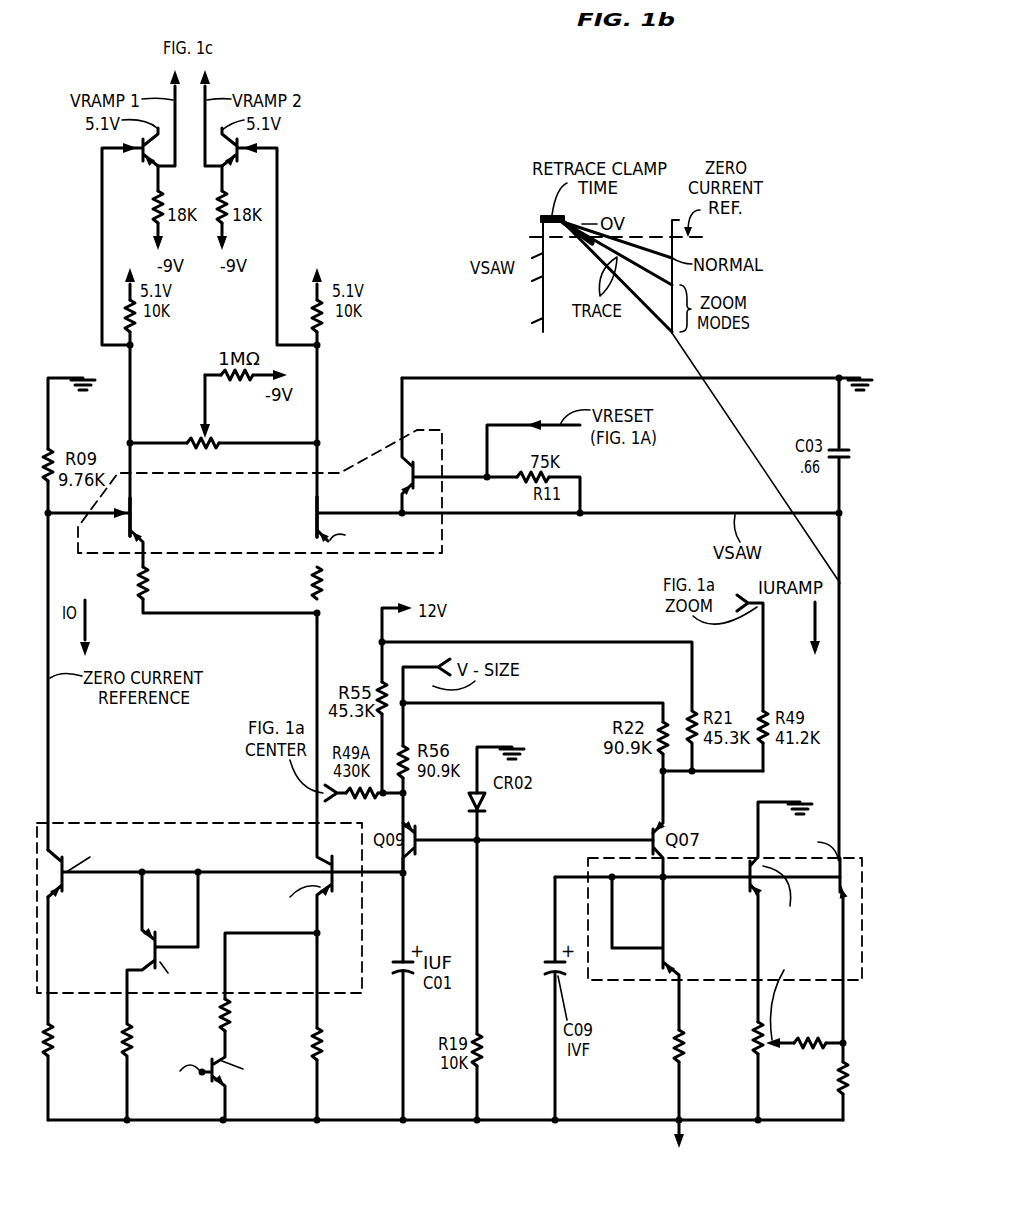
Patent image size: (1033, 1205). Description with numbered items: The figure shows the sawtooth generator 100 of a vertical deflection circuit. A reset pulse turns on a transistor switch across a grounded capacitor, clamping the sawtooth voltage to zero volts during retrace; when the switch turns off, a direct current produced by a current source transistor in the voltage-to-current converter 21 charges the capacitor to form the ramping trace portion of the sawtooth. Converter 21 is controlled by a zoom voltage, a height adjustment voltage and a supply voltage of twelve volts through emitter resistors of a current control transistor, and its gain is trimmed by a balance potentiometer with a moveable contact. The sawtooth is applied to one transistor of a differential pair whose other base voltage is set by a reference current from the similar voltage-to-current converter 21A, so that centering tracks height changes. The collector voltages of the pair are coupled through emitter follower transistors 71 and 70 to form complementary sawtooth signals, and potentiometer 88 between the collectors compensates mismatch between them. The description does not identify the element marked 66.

The emitter follower transistor 70 is at (146, 158).
The emitter follower transistor 71 is at (250, 142).
The potentiometer 88 is at (210, 438).
The sawtooth generator 100 is at (542, 562).
The V/I converter 21A is at (130, 770).
The voltage-to-current (V/I) converter 21 is at (732, 812).
The node 66 is at (265, 936).